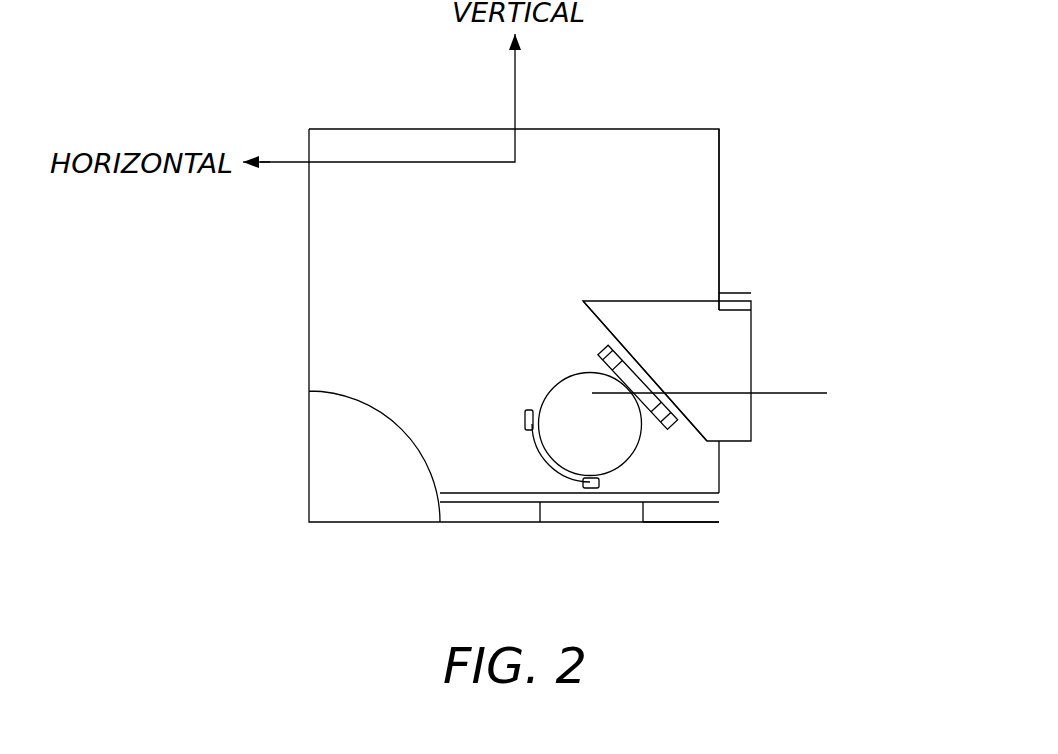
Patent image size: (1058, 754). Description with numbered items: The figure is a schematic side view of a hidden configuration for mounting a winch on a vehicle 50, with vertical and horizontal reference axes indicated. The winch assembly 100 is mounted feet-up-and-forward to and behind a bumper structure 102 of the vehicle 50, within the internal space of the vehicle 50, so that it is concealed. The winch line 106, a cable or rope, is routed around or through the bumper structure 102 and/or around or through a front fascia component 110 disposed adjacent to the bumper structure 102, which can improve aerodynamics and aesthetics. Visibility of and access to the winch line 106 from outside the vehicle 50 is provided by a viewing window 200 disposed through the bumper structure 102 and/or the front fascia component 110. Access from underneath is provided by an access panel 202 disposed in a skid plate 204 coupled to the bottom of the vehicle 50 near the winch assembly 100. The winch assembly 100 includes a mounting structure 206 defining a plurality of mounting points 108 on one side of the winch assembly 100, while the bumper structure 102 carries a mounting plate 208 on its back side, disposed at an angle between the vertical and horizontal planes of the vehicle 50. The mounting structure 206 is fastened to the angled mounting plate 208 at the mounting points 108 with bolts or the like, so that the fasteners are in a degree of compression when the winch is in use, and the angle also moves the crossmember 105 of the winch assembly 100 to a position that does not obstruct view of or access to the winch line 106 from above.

The vehicle 50 is at (644, 172).
The winch assembly 100 is at (522, 474).
The bumper structure 102 is at (752, 355).
The crossmember 105 is at (546, 472).
The winch line 106 is at (807, 392).
The mounting points 108 is at (684, 434).
The front fascia component 110 is at (741, 226).
The viewing window 200 is at (754, 280).
The access panel 202 is at (595, 523).
The skid plate 204 is at (678, 525).
The mounting structure 206 is at (595, 354).
The mounting plate 208 is at (583, 321).